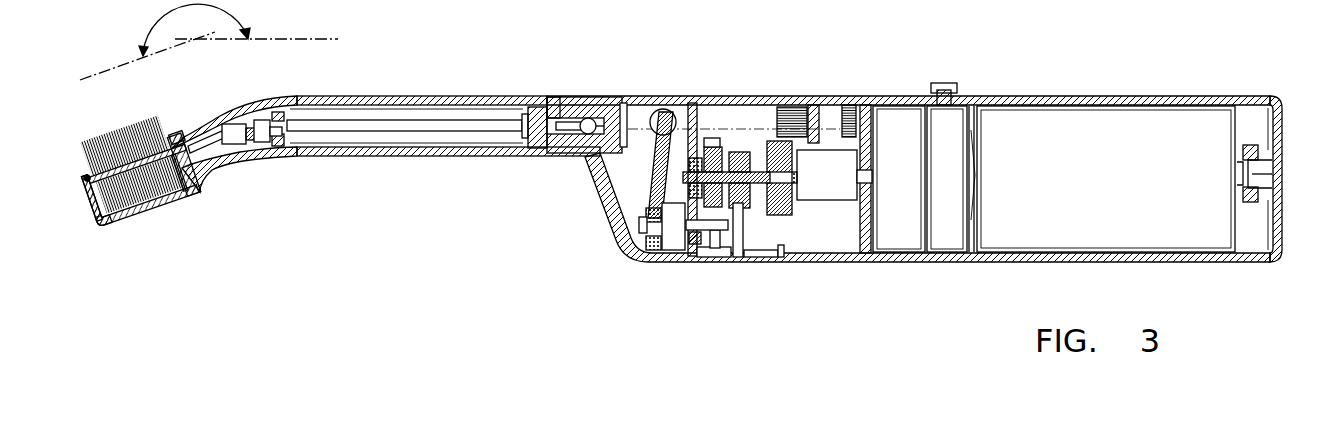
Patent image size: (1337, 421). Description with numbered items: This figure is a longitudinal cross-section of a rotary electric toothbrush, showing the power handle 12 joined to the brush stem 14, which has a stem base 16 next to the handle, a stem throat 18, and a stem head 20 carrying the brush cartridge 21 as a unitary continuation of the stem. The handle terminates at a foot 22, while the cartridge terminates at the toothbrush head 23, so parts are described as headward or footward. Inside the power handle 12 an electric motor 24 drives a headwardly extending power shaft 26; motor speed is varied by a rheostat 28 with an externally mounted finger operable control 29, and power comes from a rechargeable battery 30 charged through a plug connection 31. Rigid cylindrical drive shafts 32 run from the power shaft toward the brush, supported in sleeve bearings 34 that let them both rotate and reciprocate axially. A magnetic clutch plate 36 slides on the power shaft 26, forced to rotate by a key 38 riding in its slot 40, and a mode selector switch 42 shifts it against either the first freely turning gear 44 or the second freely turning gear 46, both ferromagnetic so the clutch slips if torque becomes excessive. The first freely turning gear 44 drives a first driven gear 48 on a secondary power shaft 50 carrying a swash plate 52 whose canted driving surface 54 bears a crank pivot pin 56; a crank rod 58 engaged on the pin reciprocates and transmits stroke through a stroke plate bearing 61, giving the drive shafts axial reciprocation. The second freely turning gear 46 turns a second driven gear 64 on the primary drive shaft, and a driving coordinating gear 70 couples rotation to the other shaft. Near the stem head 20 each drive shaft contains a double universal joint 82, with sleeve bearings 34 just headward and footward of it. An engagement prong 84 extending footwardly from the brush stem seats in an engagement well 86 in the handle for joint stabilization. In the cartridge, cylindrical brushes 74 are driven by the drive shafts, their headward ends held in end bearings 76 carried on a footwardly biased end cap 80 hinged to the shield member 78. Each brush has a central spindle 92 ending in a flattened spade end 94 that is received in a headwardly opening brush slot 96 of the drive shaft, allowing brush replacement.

The power handle 12 is at (898, 95).
The brush stem 14 is at (368, 97).
The stem base 16 is at (528, 97).
The stem throat 18 is at (395, 158).
The stem head 20 is at (208, 176).
The brush cartridge 21 is at (130, 228).
The foot 22 is at (1282, 122).
The toothbrush head 23 is at (97, 232).
The electric motor 24 is at (880, 240).
The power shaft 26 is at (793, 205).
The rheostat 28 is at (950, 240).
The finger operable control 29 is at (948, 83).
The rechargeable battery 30 is at (1037, 227).
The plug connection 31 is at (1258, 182).
The drive shafts 32 is at (441, 122).
The sleeve bearings 34 is at (173, 135).
The magnetic clutch plate 36 is at (746, 147).
The key 38 is at (757, 150).
The slot 40 is at (728, 140).
The mode selector switch 42 is at (737, 255).
The first freely turning gear 44 is at (712, 136).
The second freely turning gear 46 is at (776, 215).
The first driven gear 48 is at (715, 245).
The secondary power shaft 50 is at (694, 250).
The swash plate 52 is at (668, 250).
The driving surface 54 is at (648, 212).
The crank pivot pin 56 is at (640, 228).
The crank rod 58 is at (652, 178).
The stroke plate bearing 61 is at (653, 110).
The second driven gear 64 is at (794, 108).
The driving coordinating gear 70 is at (848, 103).
The cylindrical brushes 74 is at (93, 140).
The end bearing 76 is at (85, 182).
The shield member 78 is at (165, 210).
The end cap 80 is at (88, 197).
The double universal joint 82 is at (228, 122).
The engagement prong 84 is at (556, 108).
The engagement well 86 is at (579, 105).
The central spindle 92 is at (121, 165).
The spade end 94 is at (191, 200).
The brush slot 96 is at (196, 182).